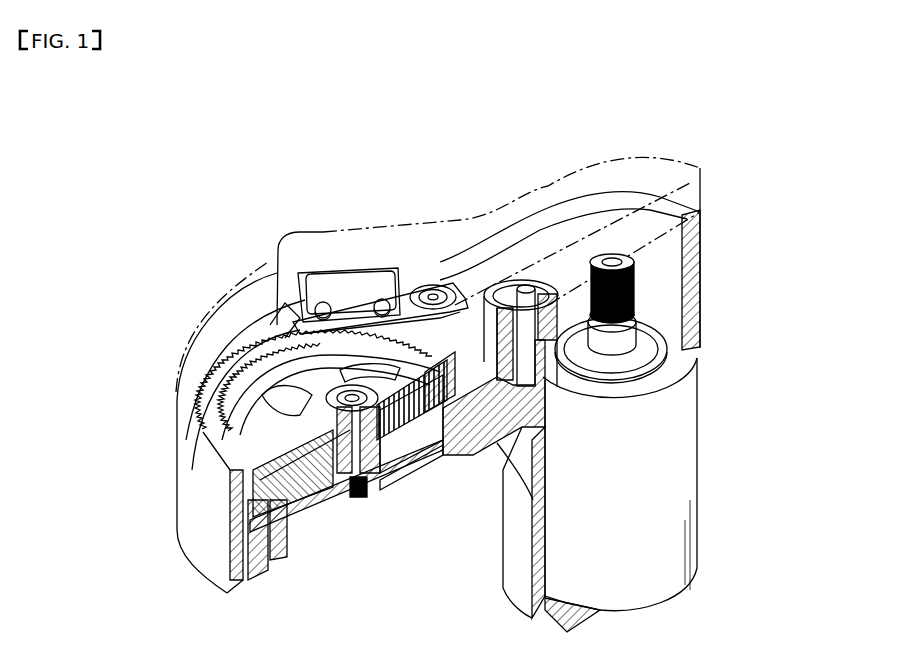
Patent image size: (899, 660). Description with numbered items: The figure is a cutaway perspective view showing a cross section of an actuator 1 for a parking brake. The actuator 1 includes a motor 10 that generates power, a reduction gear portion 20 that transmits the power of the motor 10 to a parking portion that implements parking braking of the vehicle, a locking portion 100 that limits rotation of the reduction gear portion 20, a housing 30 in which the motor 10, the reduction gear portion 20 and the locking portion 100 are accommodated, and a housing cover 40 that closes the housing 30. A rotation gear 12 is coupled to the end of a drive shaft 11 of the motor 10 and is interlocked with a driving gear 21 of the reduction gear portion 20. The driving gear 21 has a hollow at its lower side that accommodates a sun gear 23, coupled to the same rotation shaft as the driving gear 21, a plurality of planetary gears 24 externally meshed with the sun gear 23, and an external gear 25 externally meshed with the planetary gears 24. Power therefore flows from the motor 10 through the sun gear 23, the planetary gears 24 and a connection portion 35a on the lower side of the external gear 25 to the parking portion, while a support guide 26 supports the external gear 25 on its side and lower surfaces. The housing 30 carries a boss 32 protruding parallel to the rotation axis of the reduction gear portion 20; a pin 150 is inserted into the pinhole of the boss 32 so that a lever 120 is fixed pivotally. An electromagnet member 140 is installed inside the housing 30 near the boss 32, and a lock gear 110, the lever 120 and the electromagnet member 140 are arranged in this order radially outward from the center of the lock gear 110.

The actuator 1 is at (104, 437).
The motor 10 is at (680, 405).
The drive shaft 11 is at (636, 276).
The rotation gear 12 is at (618, 326).
The reduction gear portion 20 is at (398, 499).
The driving gear 21 is at (246, 560).
The sun gear 23 is at (344, 508).
The planetary gears 24 is at (312, 512).
The external gear 25 is at (410, 455).
The support guide 26 is at (264, 542).
The housing 30 is at (700, 233).
The boss 32 is at (525, 285).
The connection portion 35a is at (366, 500).
The housing cover 40 is at (698, 190).
The locking portion 100 is at (282, 302).
The lock gear 110 is at (240, 366).
The lever 120 is at (412, 305).
The electromagnet member 140 is at (346, 280).
The pin 150 is at (433, 285).